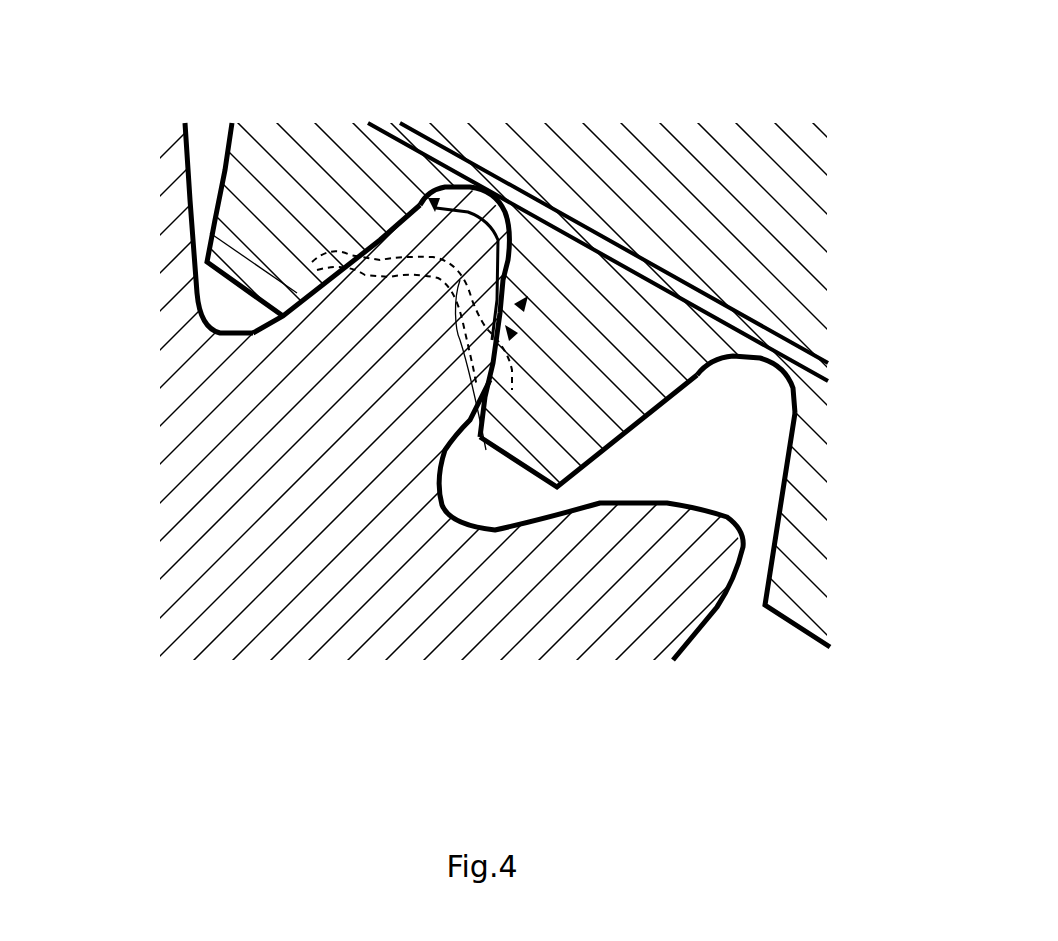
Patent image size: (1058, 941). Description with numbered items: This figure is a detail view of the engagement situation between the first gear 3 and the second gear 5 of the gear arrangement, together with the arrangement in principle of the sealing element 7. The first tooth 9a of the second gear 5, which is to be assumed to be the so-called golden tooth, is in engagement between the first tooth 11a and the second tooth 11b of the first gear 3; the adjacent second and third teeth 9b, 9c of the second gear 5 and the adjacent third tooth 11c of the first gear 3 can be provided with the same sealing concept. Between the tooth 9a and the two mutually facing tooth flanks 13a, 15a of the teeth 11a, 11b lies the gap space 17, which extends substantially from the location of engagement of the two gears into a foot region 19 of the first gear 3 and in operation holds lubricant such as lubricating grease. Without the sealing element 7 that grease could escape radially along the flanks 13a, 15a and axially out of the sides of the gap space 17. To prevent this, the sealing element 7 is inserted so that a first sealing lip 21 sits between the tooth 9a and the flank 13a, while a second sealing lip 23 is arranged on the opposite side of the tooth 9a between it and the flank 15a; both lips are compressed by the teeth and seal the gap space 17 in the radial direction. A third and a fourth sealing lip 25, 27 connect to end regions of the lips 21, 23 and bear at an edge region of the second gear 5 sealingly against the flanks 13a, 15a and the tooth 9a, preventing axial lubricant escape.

The first gear 3 is at (773, 225).
The second gear 5 is at (263, 612).
The sealing element 7 is at (333, 302).
The first tooth 9a is at (385, 323).
The second tooth 9b is at (610, 585).
The third tooth 9c is at (167, 158).
The first tooth 11a is at (697, 372).
The second tooth 11b is at (283, 187).
The third tooth 11c is at (826, 546).
The tooth flank 13a is at (558, 335).
The tooth flank 15a is at (372, 247).
The gap space 17 is at (522, 298).
The foot region 19 is at (426, 192).
The first sealing lip 21 is at (484, 418).
The second sealing lip 23 is at (327, 252).
The third sealing lip 25 is at (467, 300).
The fourth sealing lip 27 is at (345, 434).